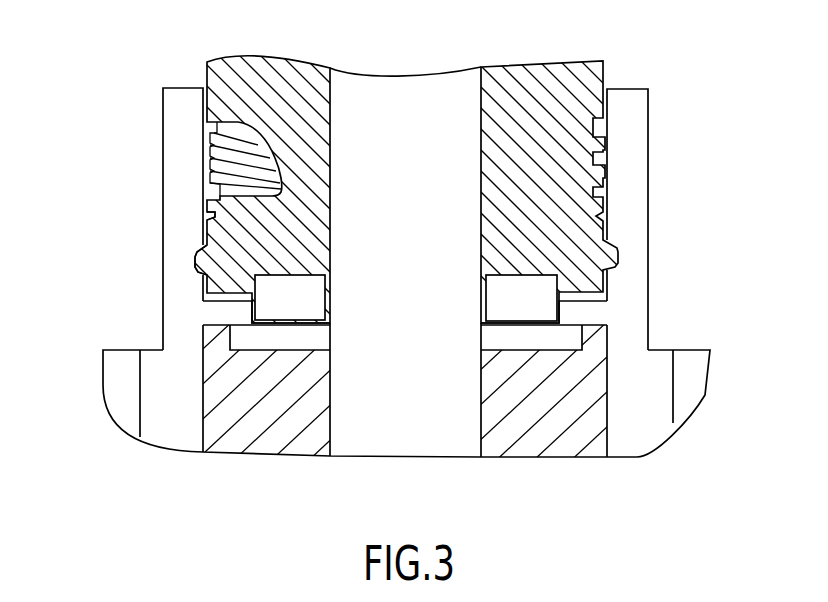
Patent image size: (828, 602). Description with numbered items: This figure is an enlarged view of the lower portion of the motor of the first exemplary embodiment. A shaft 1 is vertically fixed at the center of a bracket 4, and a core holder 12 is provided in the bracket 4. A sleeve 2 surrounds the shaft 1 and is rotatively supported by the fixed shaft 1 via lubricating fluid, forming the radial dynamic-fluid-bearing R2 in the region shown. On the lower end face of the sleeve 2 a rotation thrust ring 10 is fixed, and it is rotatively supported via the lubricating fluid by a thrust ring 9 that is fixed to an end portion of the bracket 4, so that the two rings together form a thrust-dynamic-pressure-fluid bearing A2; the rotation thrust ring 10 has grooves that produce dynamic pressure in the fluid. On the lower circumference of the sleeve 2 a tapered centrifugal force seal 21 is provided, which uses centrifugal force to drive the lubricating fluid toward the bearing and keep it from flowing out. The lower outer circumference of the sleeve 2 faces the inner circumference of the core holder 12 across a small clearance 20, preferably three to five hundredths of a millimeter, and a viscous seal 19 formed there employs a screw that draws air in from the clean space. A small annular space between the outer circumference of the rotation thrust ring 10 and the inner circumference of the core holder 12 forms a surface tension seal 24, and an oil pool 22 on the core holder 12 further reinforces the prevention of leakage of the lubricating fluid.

The shaft 1 is at (434, 93).
The sleeve 2 is at (538, 95).
The radial dynamic-fluid-bearing R2 is at (328, 158).
The bracket 4 is at (563, 425).
The thrust ring 9 is at (528, 340).
The rotation thrust ring 10 is at (285, 300).
The core holder 12 is at (628, 103).
The viscous seal 19 is at (208, 158).
The small clearance 20 is at (209, 125).
The tapered centrifugal force seal 21 is at (211, 219).
The oil pool 22 is at (197, 258).
The surface tension seal 24 is at (252, 303).
The thrust-dynamic-pressure-fluid bearing A2 is at (303, 327).